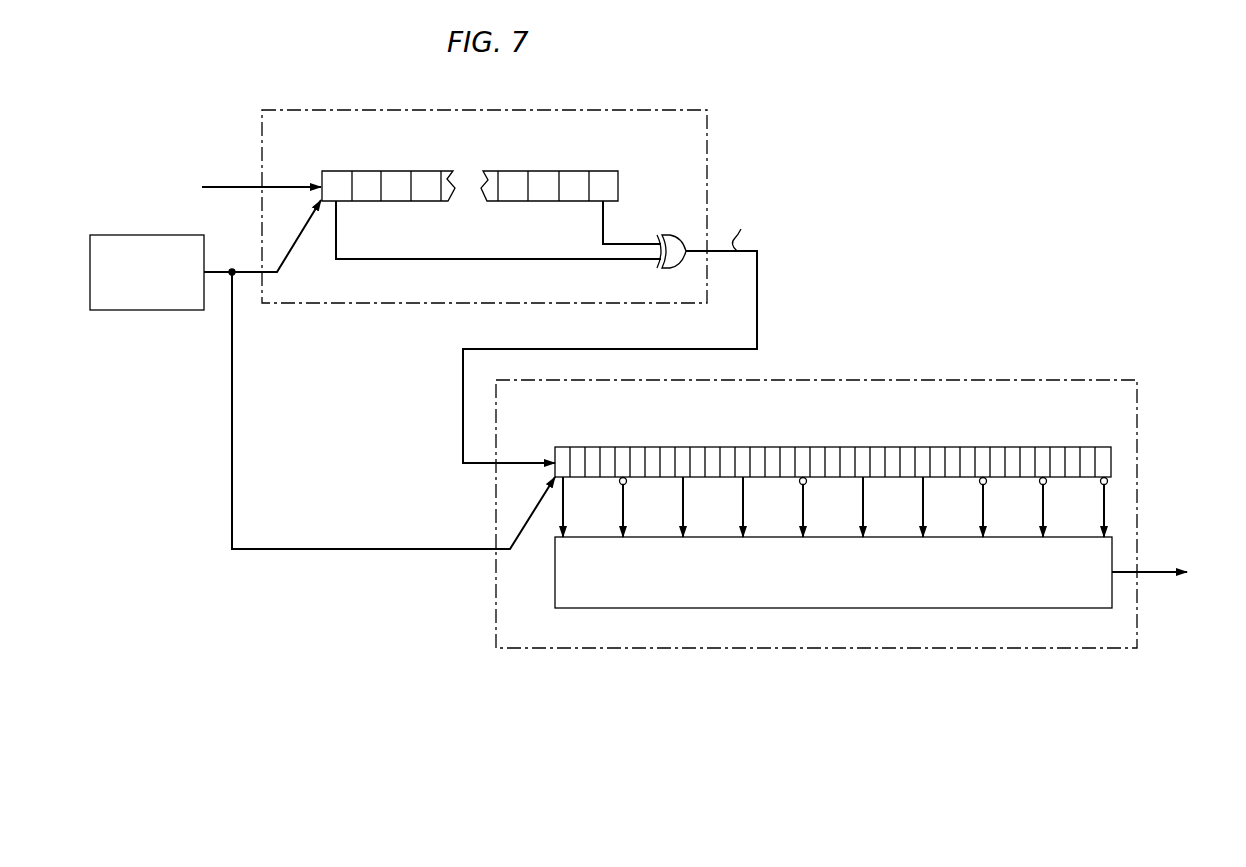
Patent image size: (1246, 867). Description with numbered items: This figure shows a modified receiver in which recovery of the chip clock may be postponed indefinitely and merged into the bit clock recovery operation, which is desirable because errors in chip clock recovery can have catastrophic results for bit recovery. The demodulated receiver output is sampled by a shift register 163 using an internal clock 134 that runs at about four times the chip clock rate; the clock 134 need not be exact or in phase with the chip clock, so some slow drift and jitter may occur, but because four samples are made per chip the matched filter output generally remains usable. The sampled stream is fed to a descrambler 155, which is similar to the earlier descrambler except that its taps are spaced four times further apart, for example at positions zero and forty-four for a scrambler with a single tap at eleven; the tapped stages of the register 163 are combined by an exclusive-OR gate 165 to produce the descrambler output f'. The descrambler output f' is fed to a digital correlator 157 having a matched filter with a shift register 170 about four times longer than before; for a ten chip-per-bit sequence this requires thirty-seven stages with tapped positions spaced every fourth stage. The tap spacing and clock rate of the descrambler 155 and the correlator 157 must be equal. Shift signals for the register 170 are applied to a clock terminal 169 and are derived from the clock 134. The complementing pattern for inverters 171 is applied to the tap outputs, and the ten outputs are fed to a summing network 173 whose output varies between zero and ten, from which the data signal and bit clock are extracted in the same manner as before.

The internal clock 134 is at (128, 235).
The descrambler 155 is at (652, 110).
The digital correlator 157 is at (973, 380).
The shift register 163 is at (566, 171).
The exclusive-OR gate 165 is at (674, 236).
The clock terminal 169 is at (408, 550).
The shift register 170 is at (648, 447).
The inverters 171 is at (620, 479).
The summing network 173 is at (589, 609).